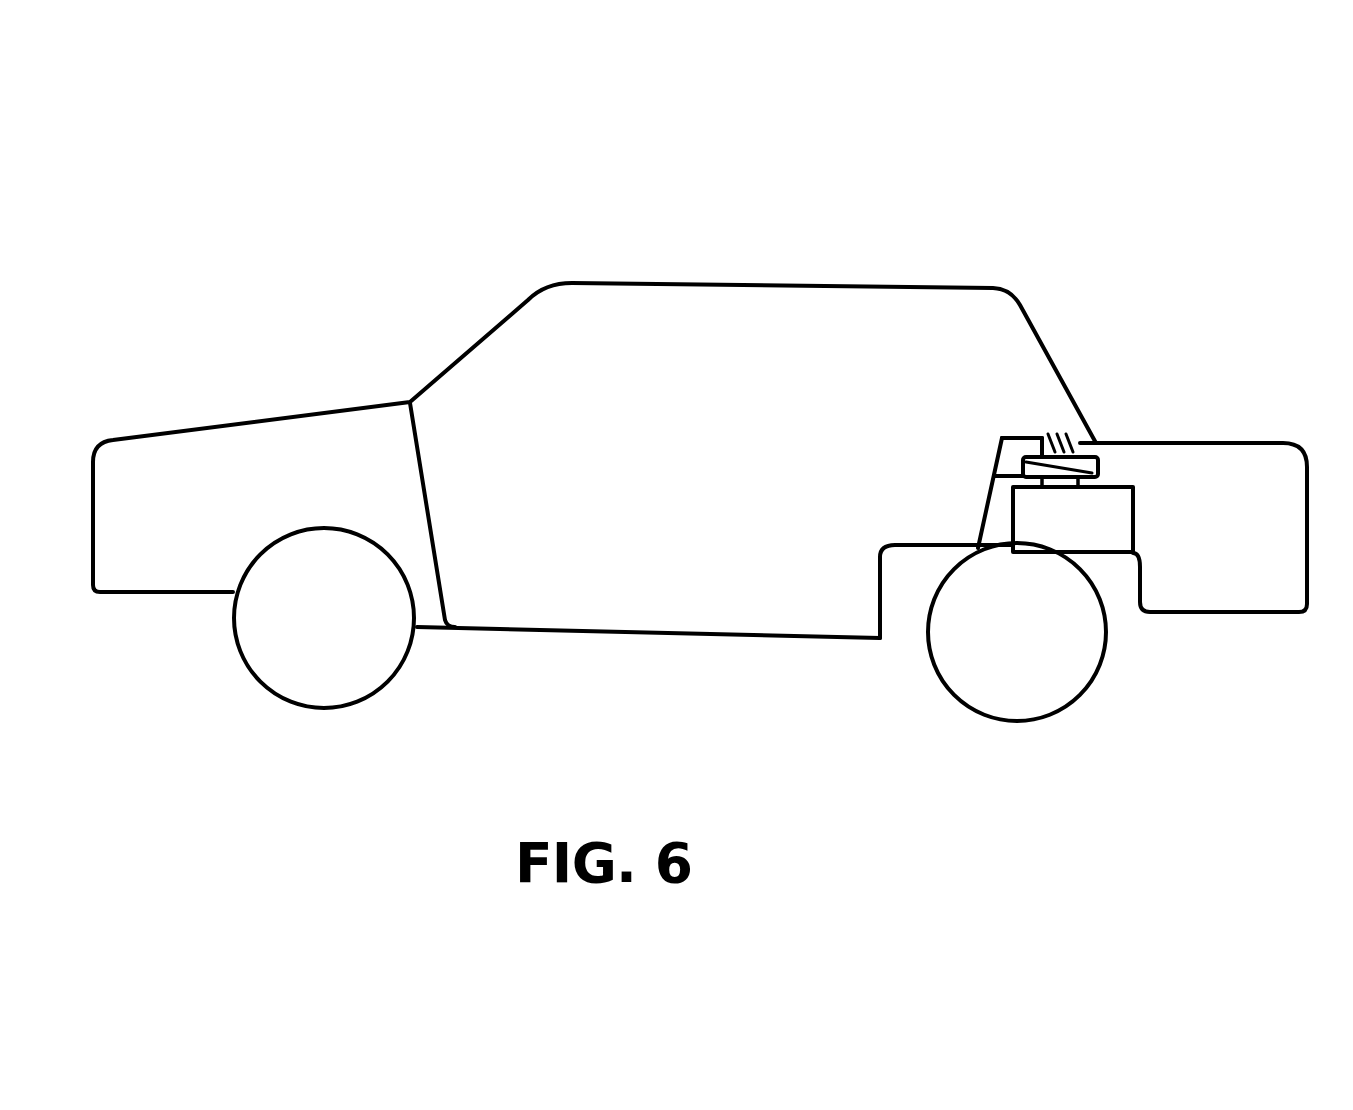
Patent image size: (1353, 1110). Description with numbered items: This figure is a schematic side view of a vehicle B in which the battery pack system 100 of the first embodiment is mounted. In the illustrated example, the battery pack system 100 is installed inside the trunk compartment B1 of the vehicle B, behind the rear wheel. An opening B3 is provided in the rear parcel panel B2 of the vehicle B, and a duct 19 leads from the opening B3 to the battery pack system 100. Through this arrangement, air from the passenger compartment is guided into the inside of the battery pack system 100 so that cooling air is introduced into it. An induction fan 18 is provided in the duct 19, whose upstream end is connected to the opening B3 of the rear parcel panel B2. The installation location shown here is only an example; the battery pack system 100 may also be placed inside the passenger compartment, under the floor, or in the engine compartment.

The vehicle B is at (870, 263).
The trunk compartment B1 is at (1208, 478).
The rear parcel panel B2 is at (1017, 437).
The opening B3 is at (1063, 430).
The induction fan 18 is at (1000, 458).
The duct 19 is at (996, 472).
The battery pack system 100 is at (1140, 520).